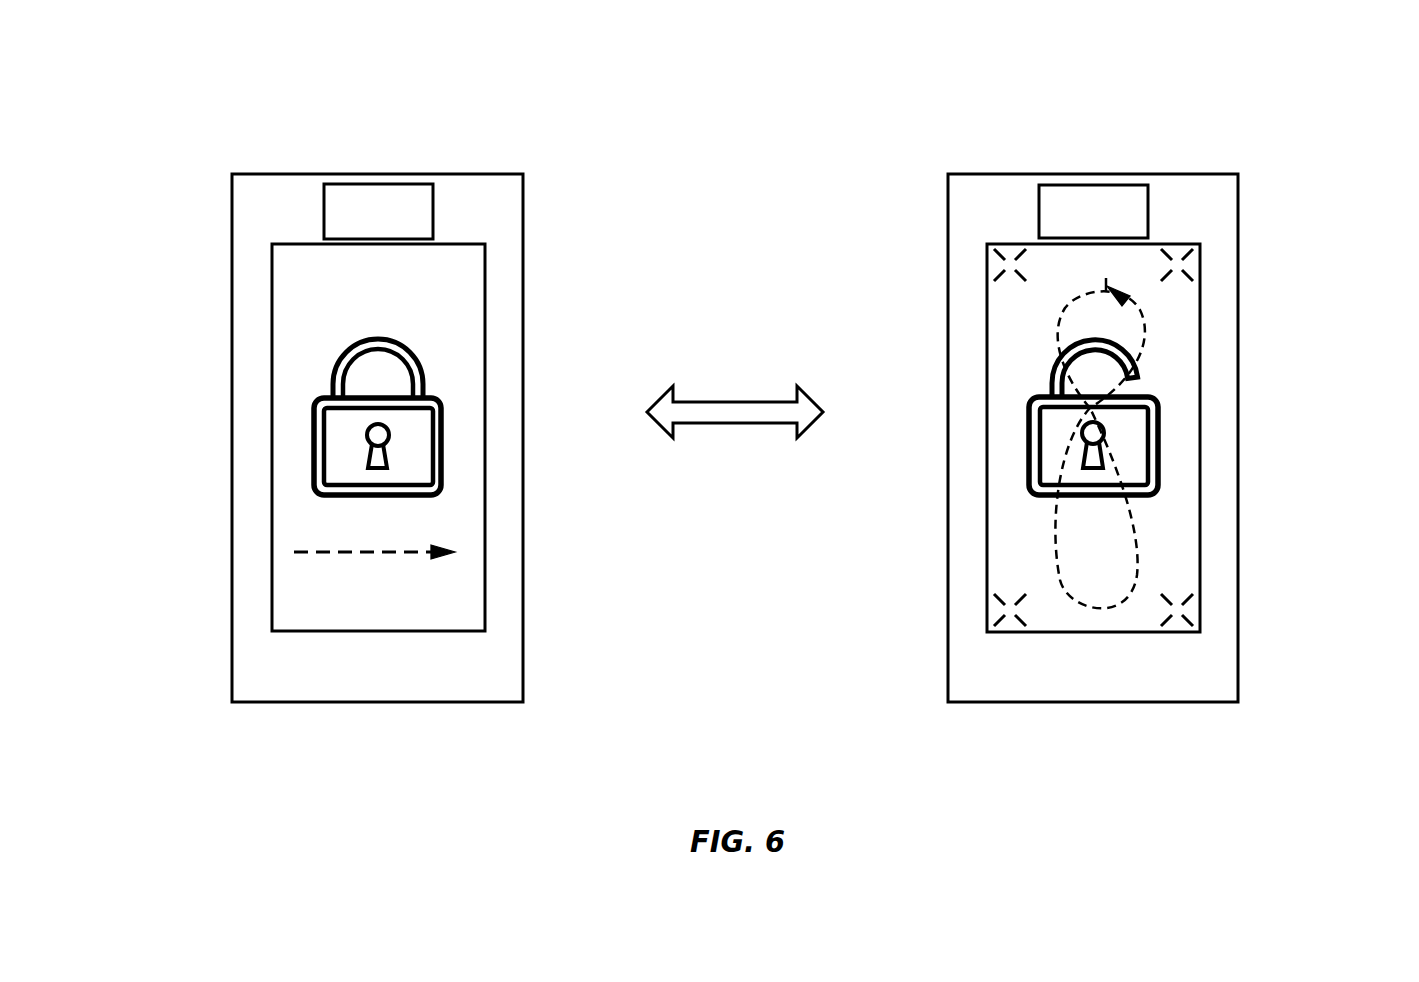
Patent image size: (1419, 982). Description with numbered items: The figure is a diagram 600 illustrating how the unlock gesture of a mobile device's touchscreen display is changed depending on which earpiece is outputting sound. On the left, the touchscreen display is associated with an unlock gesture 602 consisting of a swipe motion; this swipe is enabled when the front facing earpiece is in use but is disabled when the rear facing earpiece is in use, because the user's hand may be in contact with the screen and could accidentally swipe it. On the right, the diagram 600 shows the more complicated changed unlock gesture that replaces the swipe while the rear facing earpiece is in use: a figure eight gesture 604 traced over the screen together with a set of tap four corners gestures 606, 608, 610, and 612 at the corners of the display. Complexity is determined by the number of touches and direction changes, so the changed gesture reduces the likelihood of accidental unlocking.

The diagram 600 is at (773, 414).
The unlock gesture 602 is at (385, 552).
The figure 8 gesture 604 is at (1140, 557).
The tap four corners gesture 606 is at (1183, 270).
The tap four corners gesture 608 is at (1186, 620).
The tap four corners gesture 610 is at (1000, 268).
The tap four corners gesture 612 is at (1002, 620).